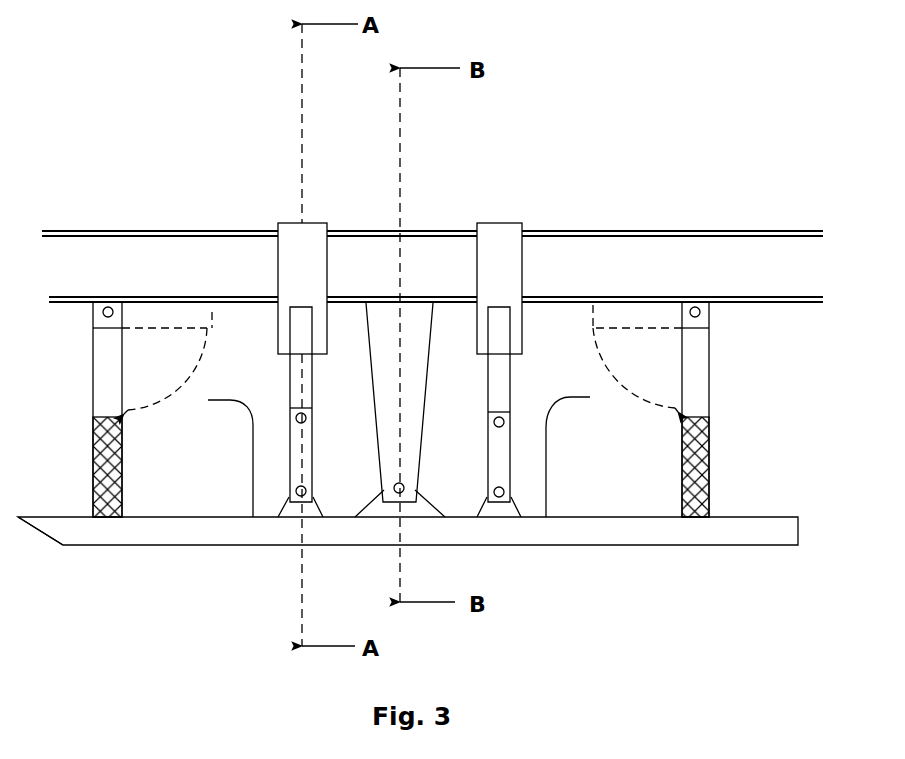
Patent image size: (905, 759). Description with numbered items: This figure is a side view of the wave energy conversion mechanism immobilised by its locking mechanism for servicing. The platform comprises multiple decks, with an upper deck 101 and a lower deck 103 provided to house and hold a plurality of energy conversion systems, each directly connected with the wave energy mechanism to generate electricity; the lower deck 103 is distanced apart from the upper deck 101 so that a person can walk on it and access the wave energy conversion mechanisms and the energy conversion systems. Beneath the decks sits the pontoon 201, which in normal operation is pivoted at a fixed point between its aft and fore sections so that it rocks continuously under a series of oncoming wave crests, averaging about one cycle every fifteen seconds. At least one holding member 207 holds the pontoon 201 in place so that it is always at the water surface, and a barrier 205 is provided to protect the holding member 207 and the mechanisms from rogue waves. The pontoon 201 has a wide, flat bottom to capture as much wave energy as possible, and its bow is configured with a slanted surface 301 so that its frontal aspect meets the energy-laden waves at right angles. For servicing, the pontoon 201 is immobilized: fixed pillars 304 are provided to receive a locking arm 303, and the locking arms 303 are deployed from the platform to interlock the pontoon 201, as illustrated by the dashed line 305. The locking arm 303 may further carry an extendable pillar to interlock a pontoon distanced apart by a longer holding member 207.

The upper deck 101 is at (710, 232).
The lower deck 103 is at (738, 303).
The pontoon 201 is at (178, 548).
The barrier 205 is at (547, 457).
The holding member 207 is at (418, 350).
The slanted surface 301 is at (40, 531).
The locking arm 303 is at (712, 398).
The fixed pillar 304 is at (712, 458).
The dashed line 305 is at (170, 377).